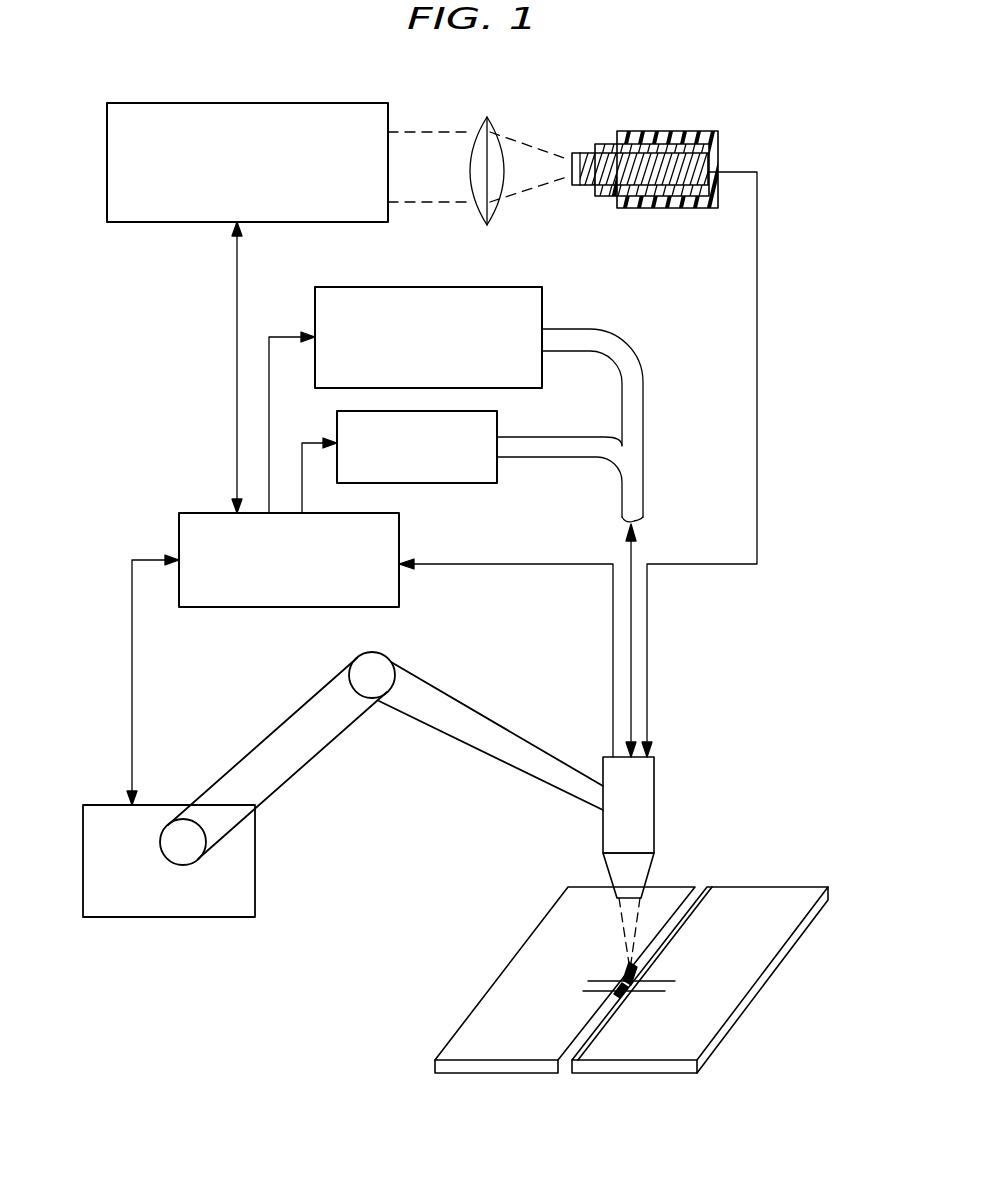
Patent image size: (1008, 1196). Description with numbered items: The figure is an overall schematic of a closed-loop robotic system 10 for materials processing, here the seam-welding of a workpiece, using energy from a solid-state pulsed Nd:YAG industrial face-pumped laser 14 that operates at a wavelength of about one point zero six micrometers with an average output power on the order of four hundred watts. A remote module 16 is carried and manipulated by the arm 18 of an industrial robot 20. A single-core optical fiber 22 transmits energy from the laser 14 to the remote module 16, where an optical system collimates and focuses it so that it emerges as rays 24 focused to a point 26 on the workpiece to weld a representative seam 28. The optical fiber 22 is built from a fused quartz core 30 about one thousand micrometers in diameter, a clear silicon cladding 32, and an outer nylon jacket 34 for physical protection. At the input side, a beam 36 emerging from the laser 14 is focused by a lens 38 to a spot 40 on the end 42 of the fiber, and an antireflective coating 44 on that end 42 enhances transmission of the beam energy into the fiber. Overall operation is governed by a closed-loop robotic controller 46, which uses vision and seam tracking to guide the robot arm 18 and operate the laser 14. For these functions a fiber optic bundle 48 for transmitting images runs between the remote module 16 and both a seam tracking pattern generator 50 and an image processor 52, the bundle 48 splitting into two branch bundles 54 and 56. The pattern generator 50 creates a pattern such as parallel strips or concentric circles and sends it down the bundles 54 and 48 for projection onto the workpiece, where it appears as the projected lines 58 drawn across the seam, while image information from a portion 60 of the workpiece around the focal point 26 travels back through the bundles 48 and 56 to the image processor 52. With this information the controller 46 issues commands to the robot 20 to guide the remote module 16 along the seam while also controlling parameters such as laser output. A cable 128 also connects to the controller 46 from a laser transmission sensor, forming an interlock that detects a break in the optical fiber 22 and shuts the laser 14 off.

The closed-loop robotic system 10 is at (775, 126).
The solid-state pulsed Nd:YAG industrial face-pumped laser 14 is at (282, 103).
The remote module 16 is at (655, 801).
The arm 18 is at (497, 748).
The industrial robot 20 is at (308, 828).
The single-core optical fiber 22 is at (757, 405).
The rays 24 is at (621, 930).
The point 26 is at (640, 976).
The seam 28 is at (703, 877).
The fused quartz core 30 is at (636, 164).
The clear silicon cladding 32 is at (608, 198).
The outer nylon jacket 34 is at (652, 131).
The beam 36 is at (449, 130).
The lens 38 is at (492, 122).
The spot 40 is at (568, 178).
The end 42 is at (571, 160).
The antireflective coating 44 is at (585, 153).
The closed-loop robotic controller 46 is at (250, 607).
The fiber optic bundle 48 is at (645, 499).
The seam tracking pattern generator 50 is at (497, 287).
The image processor 52 is at (497, 431).
The branch bundle 54 is at (630, 350).
The branch bundle 56 is at (598, 437).
The scan lines 58 is at (660, 993).
The portion of the workpiece 60 is at (555, 977).
The cable 128 is at (528, 568).